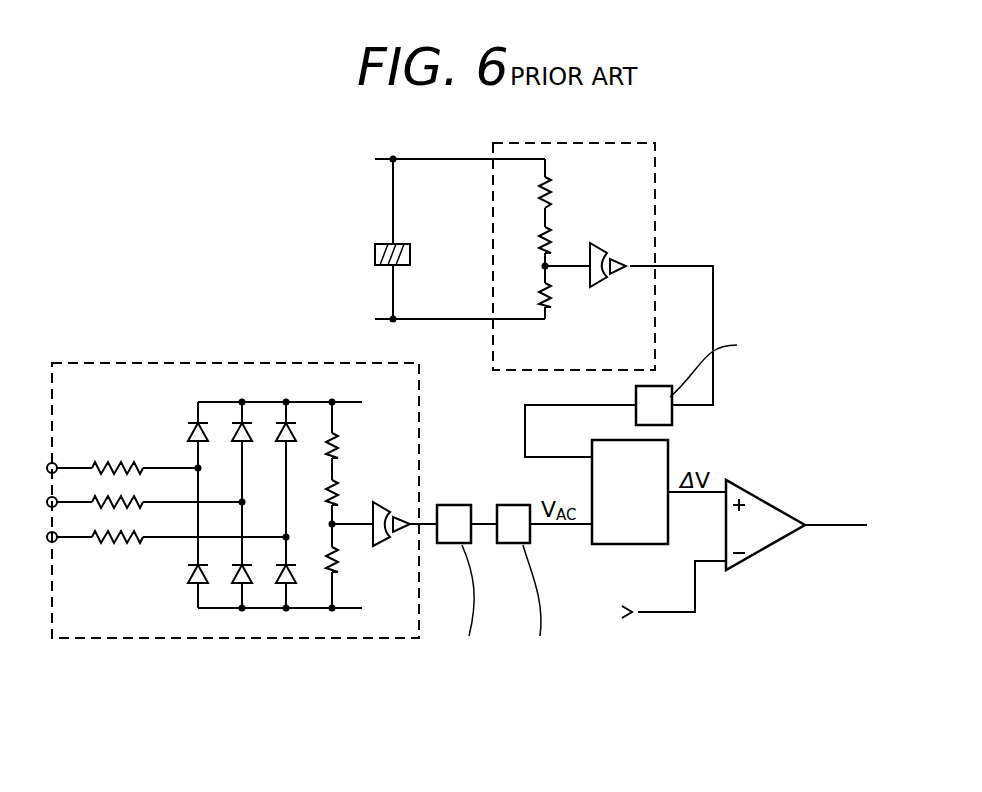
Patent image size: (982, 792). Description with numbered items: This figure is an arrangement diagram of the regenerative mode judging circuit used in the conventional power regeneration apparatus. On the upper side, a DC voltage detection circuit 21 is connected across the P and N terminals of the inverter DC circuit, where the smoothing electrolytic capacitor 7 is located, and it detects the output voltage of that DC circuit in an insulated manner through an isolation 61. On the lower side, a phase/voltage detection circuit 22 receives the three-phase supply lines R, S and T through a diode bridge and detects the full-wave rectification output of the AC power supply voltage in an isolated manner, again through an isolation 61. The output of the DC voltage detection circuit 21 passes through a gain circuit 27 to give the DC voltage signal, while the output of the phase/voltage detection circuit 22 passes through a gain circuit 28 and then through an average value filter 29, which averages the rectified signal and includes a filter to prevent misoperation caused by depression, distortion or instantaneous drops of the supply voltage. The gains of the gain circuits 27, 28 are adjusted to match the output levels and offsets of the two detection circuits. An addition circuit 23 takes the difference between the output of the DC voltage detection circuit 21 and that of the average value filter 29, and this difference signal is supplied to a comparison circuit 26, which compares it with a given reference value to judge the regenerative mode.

The smoothing electrolytic capacitor 7 is at (412, 256).
The DC voltage detection circuit 21 is at (655, 190).
The phase/voltage detection circuit 22 is at (105, 362).
The addition circuit 23 is at (620, 545).
The comparison circuit 26 is at (765, 498).
The gain circuit 27 is at (672, 423).
The gain circuit 28 is at (448, 545).
The average value filter 29 is at (507, 545).
The isolation 61 is at (600, 287).